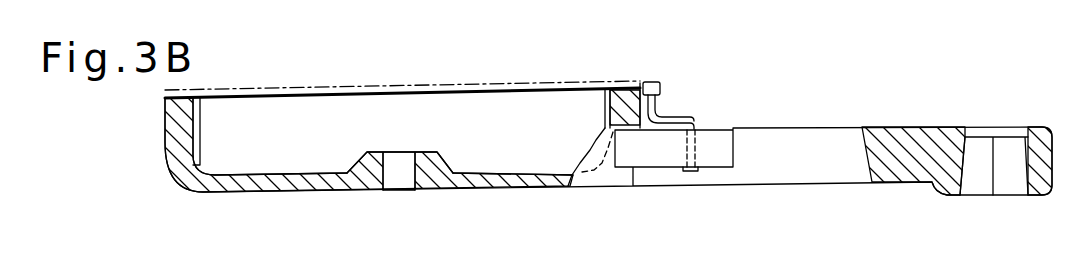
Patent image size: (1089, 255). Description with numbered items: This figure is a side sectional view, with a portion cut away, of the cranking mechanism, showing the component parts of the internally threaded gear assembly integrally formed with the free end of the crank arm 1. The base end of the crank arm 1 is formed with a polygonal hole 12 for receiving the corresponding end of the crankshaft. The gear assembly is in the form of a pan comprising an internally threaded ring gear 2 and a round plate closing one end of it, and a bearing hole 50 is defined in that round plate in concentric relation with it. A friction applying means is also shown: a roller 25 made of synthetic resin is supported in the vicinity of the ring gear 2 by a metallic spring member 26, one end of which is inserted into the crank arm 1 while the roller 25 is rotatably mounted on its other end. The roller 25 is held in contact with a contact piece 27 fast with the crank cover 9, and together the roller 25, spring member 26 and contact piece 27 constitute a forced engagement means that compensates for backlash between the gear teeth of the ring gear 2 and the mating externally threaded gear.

The crank arm 1 is at (816, 127).
The internally threaded ring gear 2 is at (555, 92).
The crank cover 9 is at (613, 85).
The polygonal hole 12 is at (1012, 158).
The roller 25 is at (662, 84).
The spring member 26 is at (660, 120).
The contact piece 27 is at (640, 83).
The bearing hole 50 is at (385, 177).